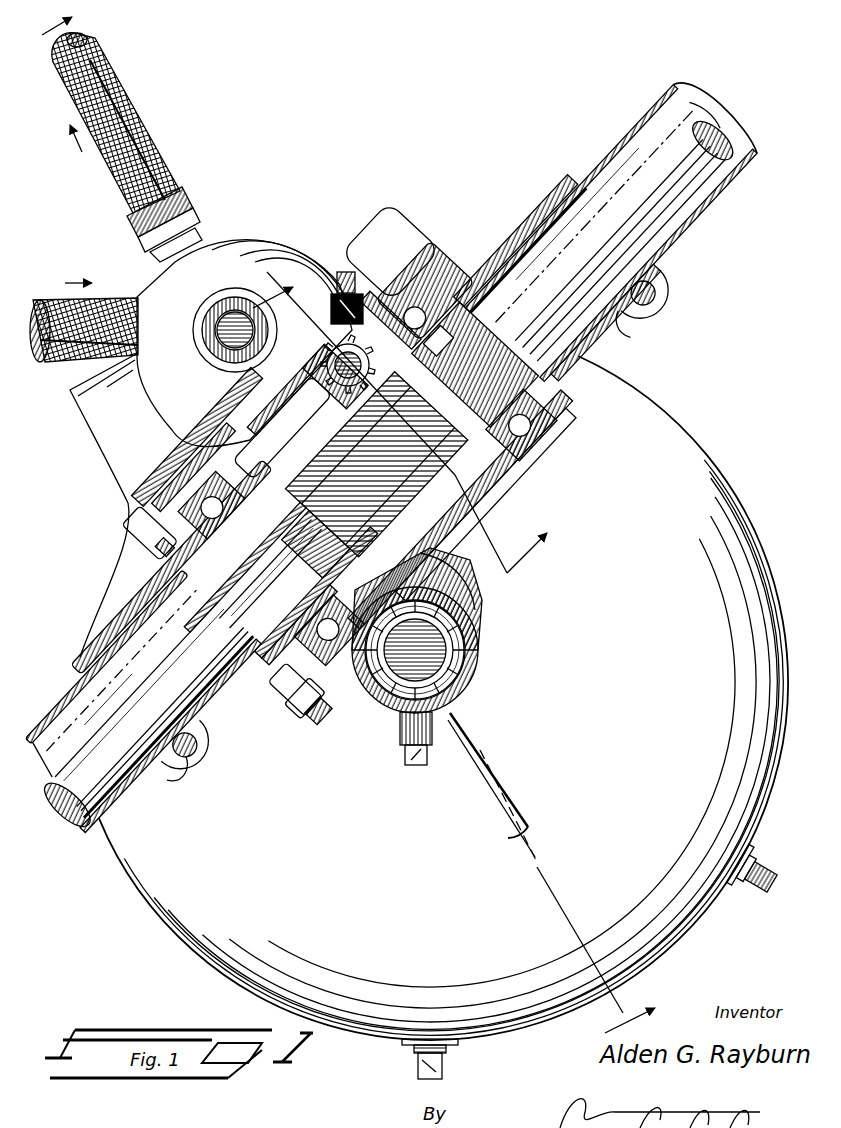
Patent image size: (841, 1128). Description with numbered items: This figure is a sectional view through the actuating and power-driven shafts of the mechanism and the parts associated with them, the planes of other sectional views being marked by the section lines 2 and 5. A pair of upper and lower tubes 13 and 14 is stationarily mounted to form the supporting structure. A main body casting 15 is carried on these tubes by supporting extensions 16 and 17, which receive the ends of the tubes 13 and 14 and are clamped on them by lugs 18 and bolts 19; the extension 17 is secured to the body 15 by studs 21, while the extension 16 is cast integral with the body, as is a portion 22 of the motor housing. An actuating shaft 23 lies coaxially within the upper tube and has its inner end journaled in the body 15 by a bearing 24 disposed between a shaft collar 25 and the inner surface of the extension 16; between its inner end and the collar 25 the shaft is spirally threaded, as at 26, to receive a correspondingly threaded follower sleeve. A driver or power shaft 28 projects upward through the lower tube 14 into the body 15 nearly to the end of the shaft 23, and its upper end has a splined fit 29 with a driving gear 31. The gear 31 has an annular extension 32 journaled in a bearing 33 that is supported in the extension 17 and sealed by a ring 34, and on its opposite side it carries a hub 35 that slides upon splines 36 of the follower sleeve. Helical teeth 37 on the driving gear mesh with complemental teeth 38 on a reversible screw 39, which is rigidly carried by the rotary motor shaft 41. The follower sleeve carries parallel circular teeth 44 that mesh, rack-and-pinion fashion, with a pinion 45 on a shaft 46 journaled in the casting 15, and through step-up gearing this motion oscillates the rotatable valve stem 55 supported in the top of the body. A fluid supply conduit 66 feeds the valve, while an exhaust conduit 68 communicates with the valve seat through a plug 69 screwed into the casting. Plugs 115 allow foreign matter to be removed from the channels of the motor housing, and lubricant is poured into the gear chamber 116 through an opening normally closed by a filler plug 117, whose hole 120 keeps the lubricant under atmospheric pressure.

The section line 2- 2 is at (351, 526).
The section line 5- 5 is at (404, 422).
The upper tube 13 is at (614, 152).
The lower tube 14 is at (62, 732).
The main body casting 15 is at (262, 256).
The supporting extension 16 is at (512, 232).
The supporting extension 17 is at (138, 607).
The lugs 18 is at (664, 284).
The bolts 19 is at (630, 330).
The studs 21 is at (428, 520).
The portion of motor housing 22 is at (443, 698).
The actuating shaft 23 is at (734, 128).
The bearing 24 is at (442, 290).
The shaft collar 25 is at (533, 476).
The spiral threading 26 is at (336, 526).
The driver (power) shaft 28 is at (112, 808).
The splined fit 29 is at (241, 576).
The driving gear 31 is at (272, 452).
The annular extension 32 is at (205, 616).
The bearing 33 is at (282, 695).
The ring 34 is at (150, 548).
The hub 35 is at (455, 578).
The splines 36 is at (300, 412).
The helical teeth 37 is at (462, 600).
The complemental teeth 38 is at (398, 728).
The reversible screw 39 is at (447, 652).
The rotary motor shaft 41 is at (463, 632).
The parallel circular teeth 44 is at (468, 462).
The pinion 45 is at (396, 290).
The shaft 46 is at (440, 348).
The rotatable valve stem 55 is at (246, 300).
The fluid supply conduit 66 is at (102, 300).
The exhaust conduit 68 is at (152, 140).
The plug 69 is at (200, 212).
The plugs 115 is at (762, 884).
The gear chamber 116 is at (512, 495).
The filler plug 117 is at (388, 262).
The hole 120 is at (346, 290).